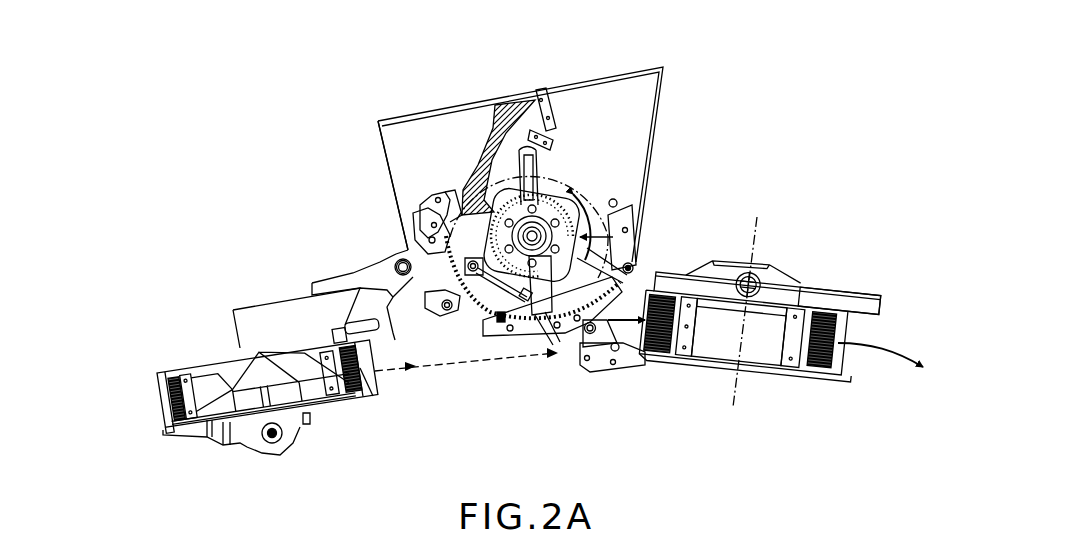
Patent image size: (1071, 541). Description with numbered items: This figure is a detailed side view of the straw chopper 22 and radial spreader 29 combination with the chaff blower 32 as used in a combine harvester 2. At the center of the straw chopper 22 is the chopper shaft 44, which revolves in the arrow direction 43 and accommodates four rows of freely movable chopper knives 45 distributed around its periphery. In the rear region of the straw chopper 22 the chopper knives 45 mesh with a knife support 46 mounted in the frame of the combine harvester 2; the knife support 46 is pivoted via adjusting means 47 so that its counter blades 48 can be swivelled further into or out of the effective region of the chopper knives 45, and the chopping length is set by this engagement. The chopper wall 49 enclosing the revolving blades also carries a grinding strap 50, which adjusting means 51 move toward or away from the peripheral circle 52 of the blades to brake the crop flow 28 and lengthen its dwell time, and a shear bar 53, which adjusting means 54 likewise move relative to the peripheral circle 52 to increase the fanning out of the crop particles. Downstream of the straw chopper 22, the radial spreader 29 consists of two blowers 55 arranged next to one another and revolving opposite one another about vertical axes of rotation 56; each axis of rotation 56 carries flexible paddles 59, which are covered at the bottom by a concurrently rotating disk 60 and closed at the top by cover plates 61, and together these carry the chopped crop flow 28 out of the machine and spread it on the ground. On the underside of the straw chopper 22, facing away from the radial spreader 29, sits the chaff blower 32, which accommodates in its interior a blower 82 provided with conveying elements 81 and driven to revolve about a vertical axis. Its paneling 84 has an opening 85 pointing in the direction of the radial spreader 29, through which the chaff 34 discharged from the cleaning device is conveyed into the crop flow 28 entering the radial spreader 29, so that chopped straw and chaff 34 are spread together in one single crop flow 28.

The combine harvester 2 is at (285, 197).
The straw chopper 22 is at (668, 128).
The crop flow 28 is at (470, 178).
The radial spreader 29 is at (800, 250).
The chaff blower 32 is at (220, 457).
The chaff 34 is at (196, 342).
The arrow direction 43 is at (605, 207).
The chopper shaft 44 is at (556, 215).
The chopper knives 45 is at (460, 187).
The knife support 46 is at (420, 252).
The counter blades 48 is at (403, 267).
The adjusting means 47 is at (413, 213).
The chopper wall 49 is at (488, 338).
The grinding strap 50 is at (463, 310).
The adjusting means 51 is at (457, 313).
The peripheral circle 52 is at (566, 180).
The shear bar 53 is at (445, 192).
The adjusting means 54 is at (440, 192).
The blowers 55 is at (765, 353).
The vertical axes of rotation 56 is at (757, 227).
The flexible paddles 59 is at (663, 357).
The concurrently rotating disk 60 is at (857, 378).
The cover plates 61 is at (877, 303).
The conveying elements 81 is at (207, 392).
The blower 82 is at (318, 427).
The paneling 84 is at (160, 387).
The opening 85 is at (380, 383).